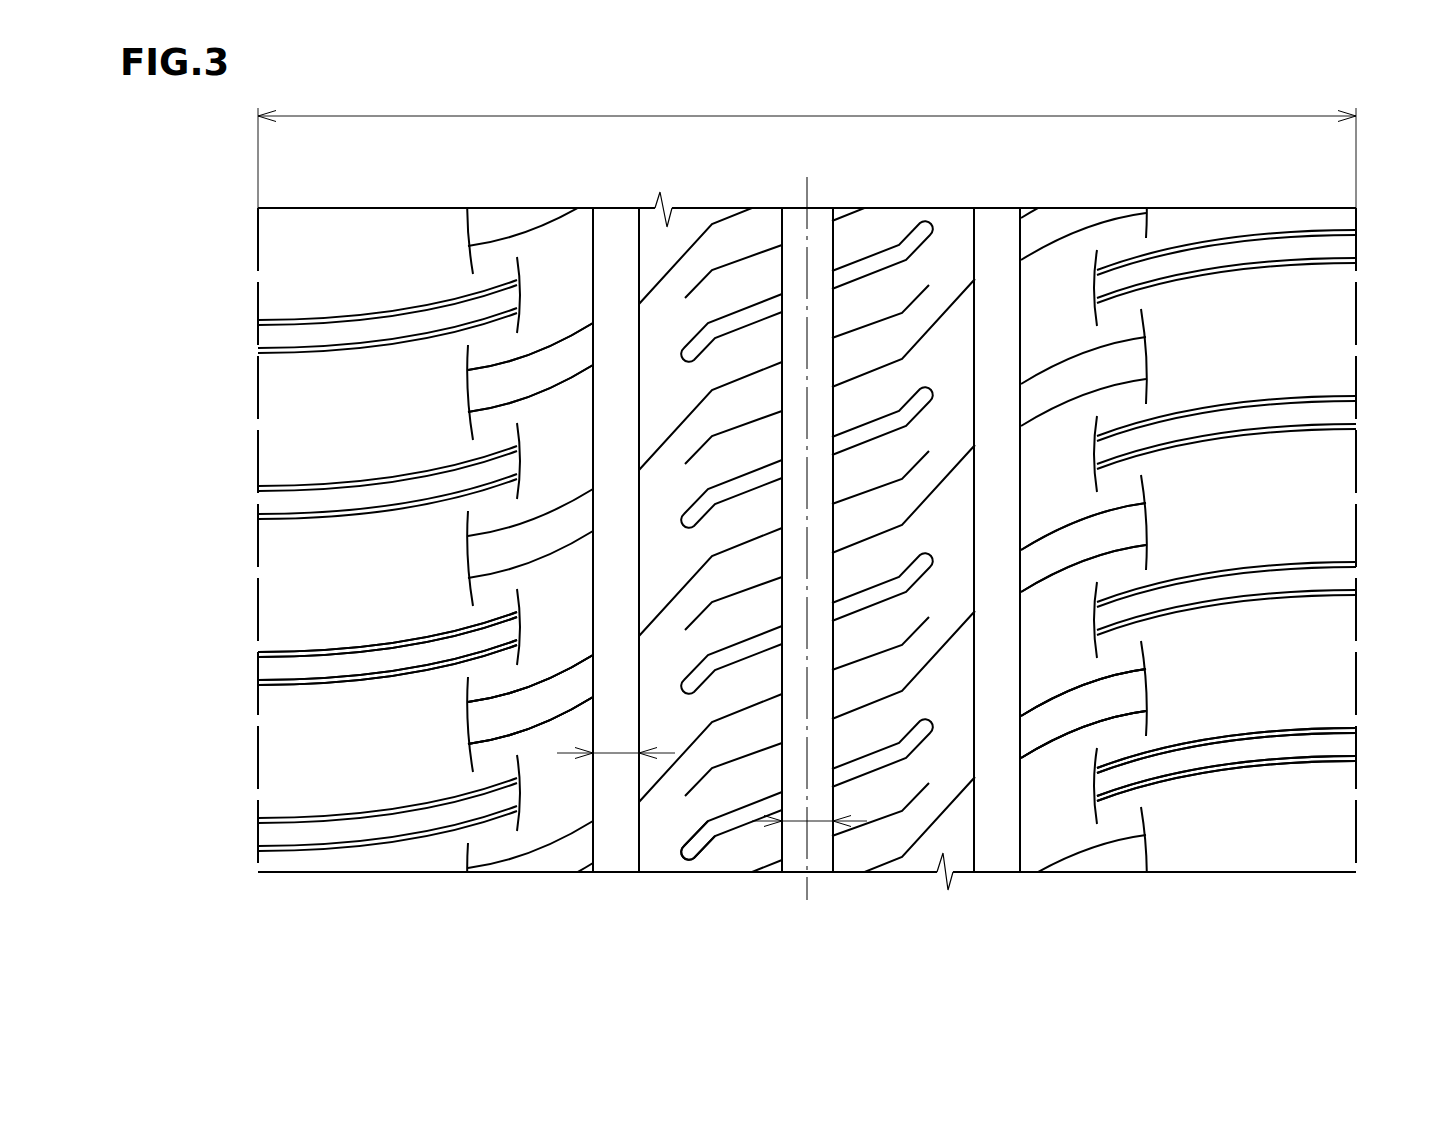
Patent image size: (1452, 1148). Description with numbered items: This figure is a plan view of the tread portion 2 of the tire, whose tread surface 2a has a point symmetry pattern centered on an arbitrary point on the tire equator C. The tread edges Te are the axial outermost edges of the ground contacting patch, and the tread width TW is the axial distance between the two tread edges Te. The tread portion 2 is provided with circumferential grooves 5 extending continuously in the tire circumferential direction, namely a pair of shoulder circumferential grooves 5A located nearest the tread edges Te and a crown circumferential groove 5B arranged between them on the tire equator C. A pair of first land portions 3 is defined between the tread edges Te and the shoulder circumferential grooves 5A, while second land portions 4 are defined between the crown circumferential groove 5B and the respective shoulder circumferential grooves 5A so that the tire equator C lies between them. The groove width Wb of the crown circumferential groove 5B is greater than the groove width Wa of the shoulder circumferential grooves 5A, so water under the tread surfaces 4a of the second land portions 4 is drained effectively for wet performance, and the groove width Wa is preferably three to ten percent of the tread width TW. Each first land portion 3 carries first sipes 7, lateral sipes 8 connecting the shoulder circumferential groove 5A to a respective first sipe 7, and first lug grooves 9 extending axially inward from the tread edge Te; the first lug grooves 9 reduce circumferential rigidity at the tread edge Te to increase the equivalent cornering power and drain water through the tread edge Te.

The tread portion 2 is at (1373, 160).
The tread surface 2a is at (1323, 352).
The first land portion 3 is at (368, 244).
The second land portion 4 is at (723, 244).
The tread surface of second land portion 4a is at (692, 812).
The circumferential groove 5 is at (995, 842).
The shoulder circumferential groove 5A is at (614, 243).
The crown circumferential groove 5B is at (821, 240).
The first sipe 7 is at (466, 388).
The lateral sipe 8 is at (523, 688).
The first lug groove 9 is at (334, 647).
The tread edge Te is at (1358, 297).
The tread width TW is at (807, 145).
The tire equator C is at (807, 525).
The groove width of shoulder circumferential groove Wa is at (617, 753).
The groove width of crown circumferential groove Wb is at (797, 821).